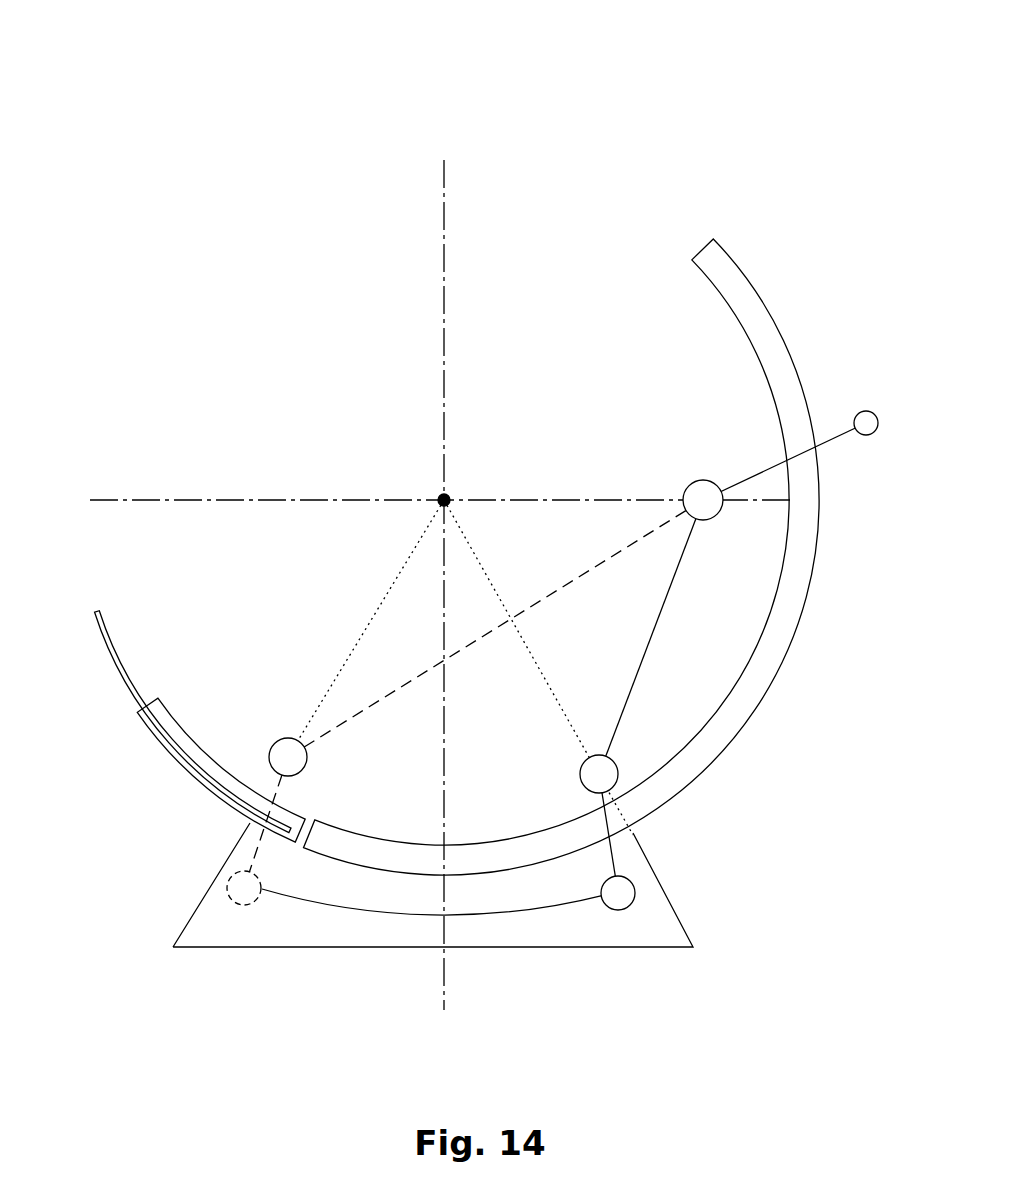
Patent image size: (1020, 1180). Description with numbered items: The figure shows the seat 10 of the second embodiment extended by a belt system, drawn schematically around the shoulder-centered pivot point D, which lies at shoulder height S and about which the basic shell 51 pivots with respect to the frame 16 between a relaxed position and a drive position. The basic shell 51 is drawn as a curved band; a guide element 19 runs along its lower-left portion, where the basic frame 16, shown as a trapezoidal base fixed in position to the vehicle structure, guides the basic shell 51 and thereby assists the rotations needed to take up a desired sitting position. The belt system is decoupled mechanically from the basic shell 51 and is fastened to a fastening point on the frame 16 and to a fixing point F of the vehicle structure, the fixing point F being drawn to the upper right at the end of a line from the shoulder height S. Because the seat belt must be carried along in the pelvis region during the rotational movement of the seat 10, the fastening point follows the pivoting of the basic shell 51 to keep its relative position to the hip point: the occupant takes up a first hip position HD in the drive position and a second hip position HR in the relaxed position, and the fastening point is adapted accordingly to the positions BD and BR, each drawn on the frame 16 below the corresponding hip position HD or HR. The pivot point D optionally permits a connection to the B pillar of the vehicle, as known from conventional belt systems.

The seat 10 is at (200, 86).
The basic shell 51 is at (693, 258).
The guide strip 19 is at (112, 661).
The frame 16 is at (187, 917).
The pivot point D is at (449, 493).
The shoulder height S is at (703, 500).
The fixing point F is at (870, 430).
The second hip position HR is at (292, 758).
The first hip position HD is at (596, 776).
The fastening point adapted to the relaxed hip position BR is at (246, 890).
The fastening point adapted to the drive hip position BD is at (621, 896).